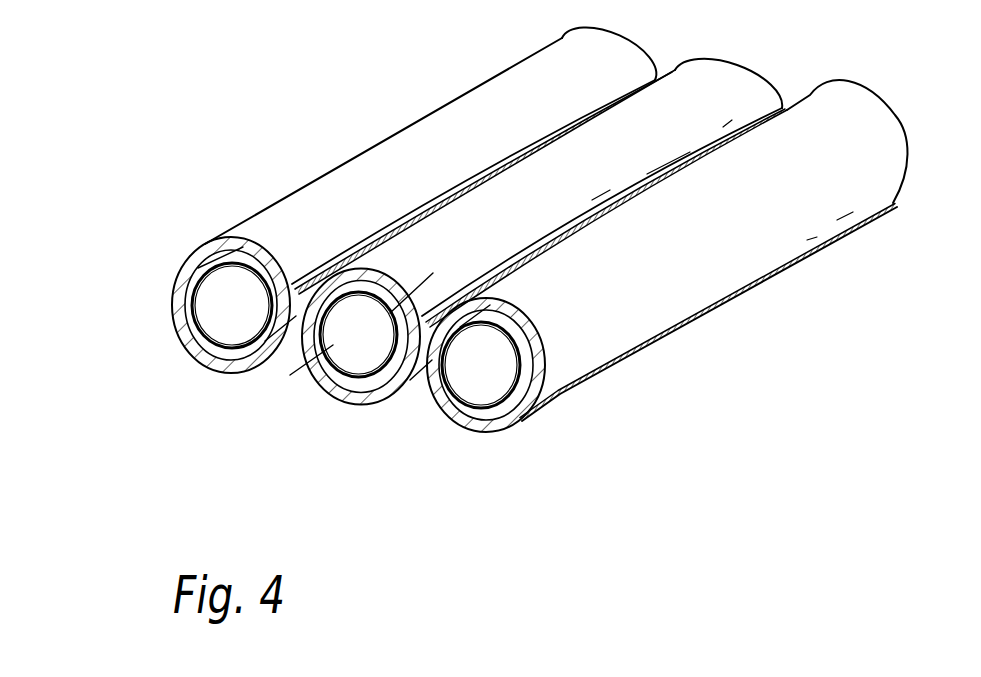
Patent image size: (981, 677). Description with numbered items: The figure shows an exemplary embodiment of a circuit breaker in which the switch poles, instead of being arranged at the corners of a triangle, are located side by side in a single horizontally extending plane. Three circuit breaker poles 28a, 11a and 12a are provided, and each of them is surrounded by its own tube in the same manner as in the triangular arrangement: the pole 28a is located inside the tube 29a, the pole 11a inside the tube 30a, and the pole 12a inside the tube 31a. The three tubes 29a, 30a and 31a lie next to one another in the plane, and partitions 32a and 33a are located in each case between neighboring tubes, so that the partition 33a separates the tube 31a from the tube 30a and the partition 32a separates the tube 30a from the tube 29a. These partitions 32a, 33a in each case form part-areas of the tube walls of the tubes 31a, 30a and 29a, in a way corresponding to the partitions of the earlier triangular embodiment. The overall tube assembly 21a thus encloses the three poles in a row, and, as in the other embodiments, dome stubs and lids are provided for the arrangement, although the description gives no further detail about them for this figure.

The circuit breaker pole 11a is at (303, 358).
The circuit breaker pole 12a is at (205, 272).
The tube 31a is at (235, 356).
The partition 33a is at (292, 296).
The tube 30a is at (358, 380).
The partition 32a is at (420, 372).
The tube 29a is at (500, 420).
The circuit breaker pole 28a is at (513, 400).
The third tube 21a is at (773, 280).